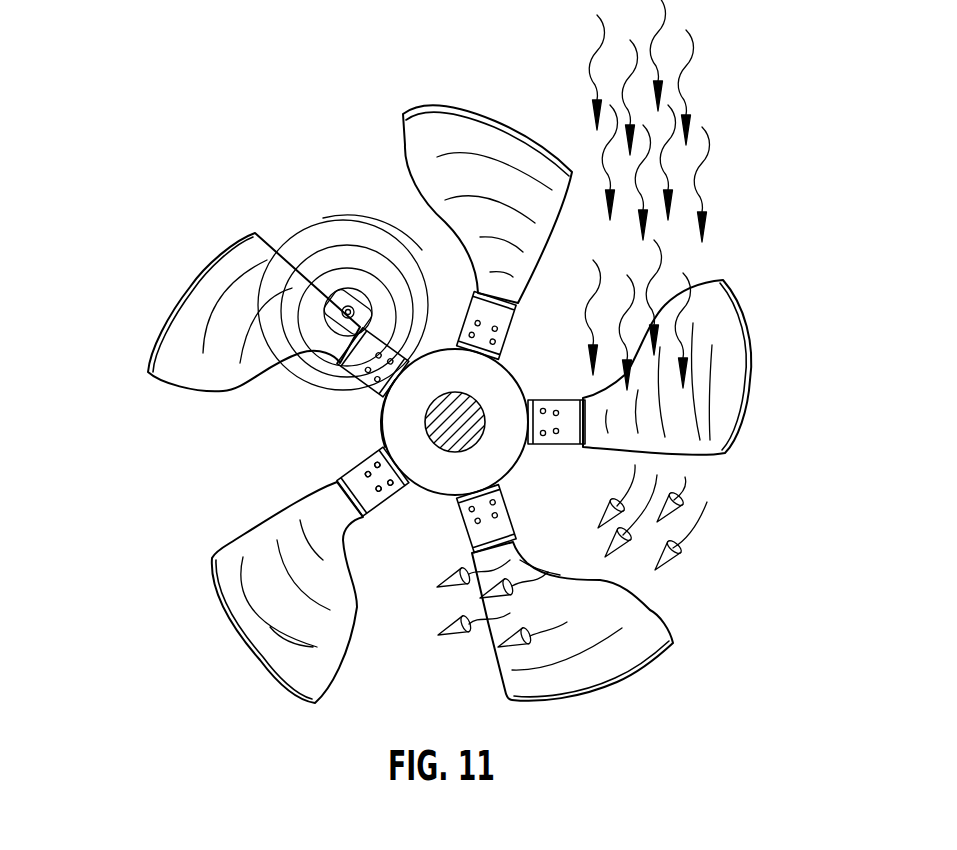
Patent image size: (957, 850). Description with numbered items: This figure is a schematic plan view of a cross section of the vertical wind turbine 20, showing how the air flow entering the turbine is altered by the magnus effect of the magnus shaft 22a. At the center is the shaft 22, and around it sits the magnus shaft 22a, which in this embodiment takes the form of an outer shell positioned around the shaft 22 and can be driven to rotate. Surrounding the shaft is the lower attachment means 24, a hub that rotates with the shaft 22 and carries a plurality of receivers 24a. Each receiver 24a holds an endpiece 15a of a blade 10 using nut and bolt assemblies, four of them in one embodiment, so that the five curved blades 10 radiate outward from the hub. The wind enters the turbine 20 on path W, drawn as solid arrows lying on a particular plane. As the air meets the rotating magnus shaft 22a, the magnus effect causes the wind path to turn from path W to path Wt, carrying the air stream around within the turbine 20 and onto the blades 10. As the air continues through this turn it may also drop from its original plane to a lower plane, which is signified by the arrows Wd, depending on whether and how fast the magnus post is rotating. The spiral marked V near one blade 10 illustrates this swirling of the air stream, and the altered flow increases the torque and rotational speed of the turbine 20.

The blade 10 is at (402, 137).
The endpiece 15a is at (372, 500).
The vertical wind turbine 20 is at (433, 420).
The shaft 22 is at (437, 427).
The magnus shaft 22a is at (385, 447).
The lower attachment means 24 is at (380, 411).
The receiver 24a is at (548, 398).
The vortex V is at (298, 208).
The wind path W is at (726, 107).
The turned wind path Wt is at (724, 539).
The dropped air stream arrows Wd is at (455, 666).